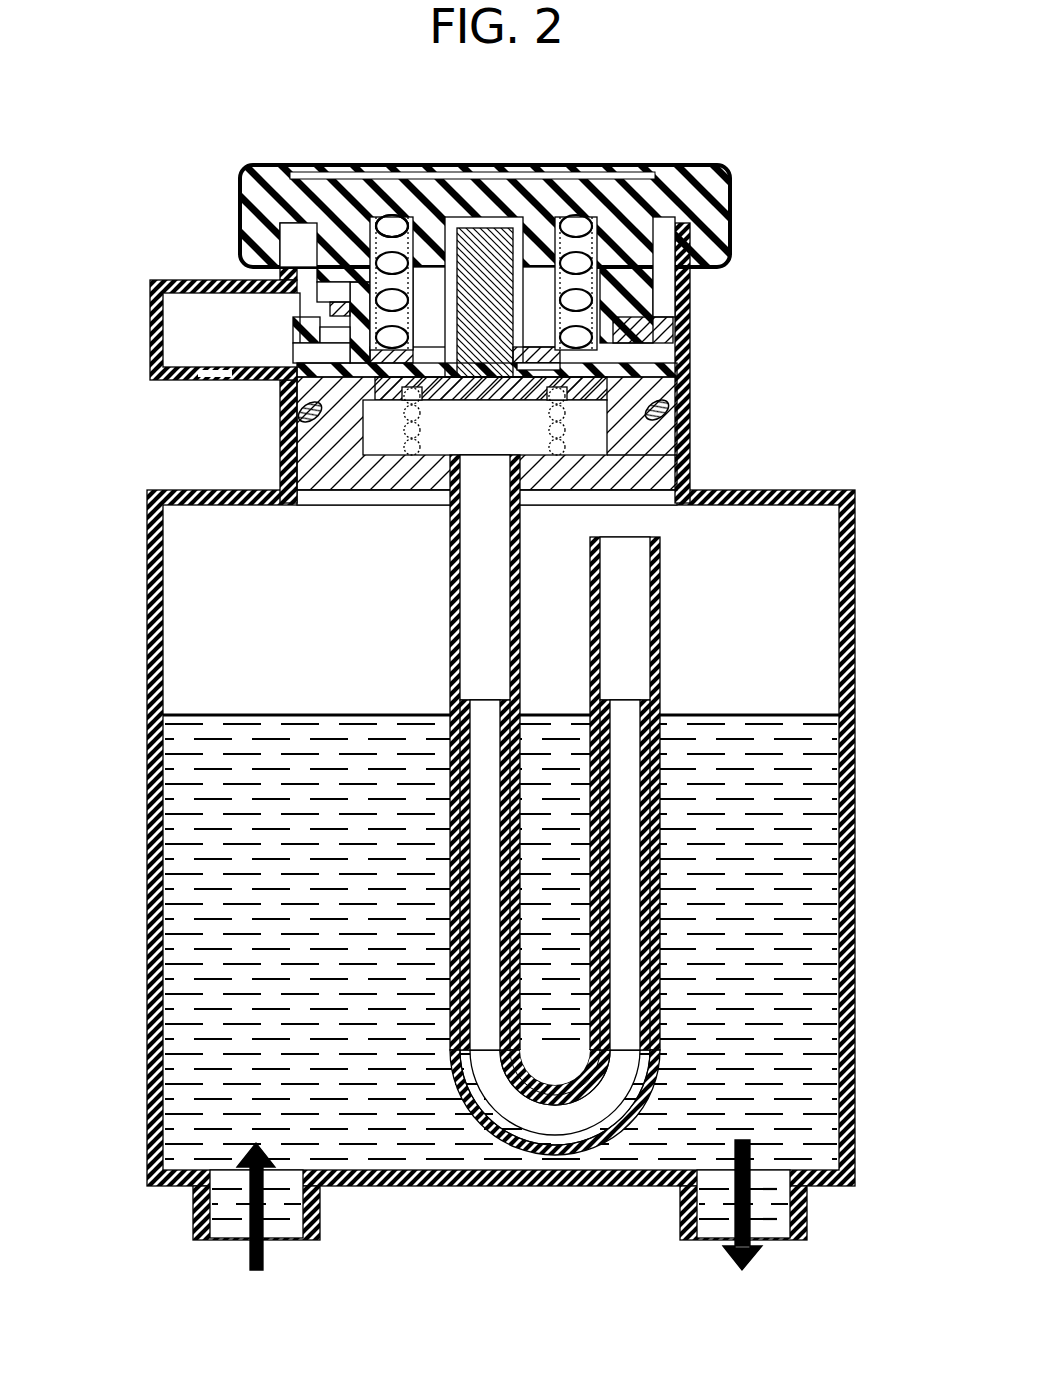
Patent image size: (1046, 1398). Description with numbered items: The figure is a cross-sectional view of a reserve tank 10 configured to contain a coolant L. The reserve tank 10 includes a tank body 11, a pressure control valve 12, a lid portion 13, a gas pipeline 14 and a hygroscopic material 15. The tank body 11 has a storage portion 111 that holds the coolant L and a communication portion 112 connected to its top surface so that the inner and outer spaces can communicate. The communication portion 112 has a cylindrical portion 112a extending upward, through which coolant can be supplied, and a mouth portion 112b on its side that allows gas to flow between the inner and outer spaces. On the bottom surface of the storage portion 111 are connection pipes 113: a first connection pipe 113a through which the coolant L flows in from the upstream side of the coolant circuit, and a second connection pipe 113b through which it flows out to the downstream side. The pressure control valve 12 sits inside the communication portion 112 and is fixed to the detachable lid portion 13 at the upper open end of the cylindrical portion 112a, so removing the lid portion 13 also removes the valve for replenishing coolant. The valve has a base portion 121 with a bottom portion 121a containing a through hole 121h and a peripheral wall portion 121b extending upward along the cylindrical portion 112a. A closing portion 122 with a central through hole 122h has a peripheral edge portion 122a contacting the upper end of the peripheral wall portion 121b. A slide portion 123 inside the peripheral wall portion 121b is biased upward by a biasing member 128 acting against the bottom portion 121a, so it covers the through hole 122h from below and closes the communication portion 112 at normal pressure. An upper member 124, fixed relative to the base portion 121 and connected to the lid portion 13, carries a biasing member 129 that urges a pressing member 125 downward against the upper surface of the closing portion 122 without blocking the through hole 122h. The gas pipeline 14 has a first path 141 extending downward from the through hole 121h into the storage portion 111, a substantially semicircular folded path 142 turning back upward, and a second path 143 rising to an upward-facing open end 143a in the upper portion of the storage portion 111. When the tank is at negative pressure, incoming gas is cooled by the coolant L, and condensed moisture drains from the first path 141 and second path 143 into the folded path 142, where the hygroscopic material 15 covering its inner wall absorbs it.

The reserve tank 10 is at (831, 196).
The tank body 11 is at (864, 790).
The storage portion 111 is at (858, 658).
The communication portion 112 is at (694, 392).
The cylindrical portion 112a is at (691, 304).
The mouth portion 112b is at (181, 306).
The connection pipe 113 is at (503, 1205).
The first connection pipe 113a is at (197, 1214).
The second connection pipe 113b is at (809, 1213).
The pressure control valve 12 is at (328, 443).
The base portion 121 is at (770, 405).
The bottom portion 121a is at (590, 478).
The peripheral wall portion 121b is at (650, 434).
The through hole 121h is at (480, 462).
The closing portion 122 is at (633, 354).
The peripheral edge portion 122a is at (330, 364).
The through hole 122h is at (533, 362).
The slide portion 123 is at (372, 388).
The upper member 124 is at (467, 212).
The pressing member 125 is at (352, 298).
The biasing member 128 is at (403, 415).
The biasing member 129 is at (393, 226).
The lid portion 13 is at (679, 180).
The gas pipeline 14 is at (90, 625).
The first path 141 is at (452, 618).
The folded path 142 is at (460, 1122).
The second path 143 is at (597, 862).
The open end 143a is at (622, 540).
The hygroscopic material 15 is at (643, 988).
The coolant L is at (806, 862).